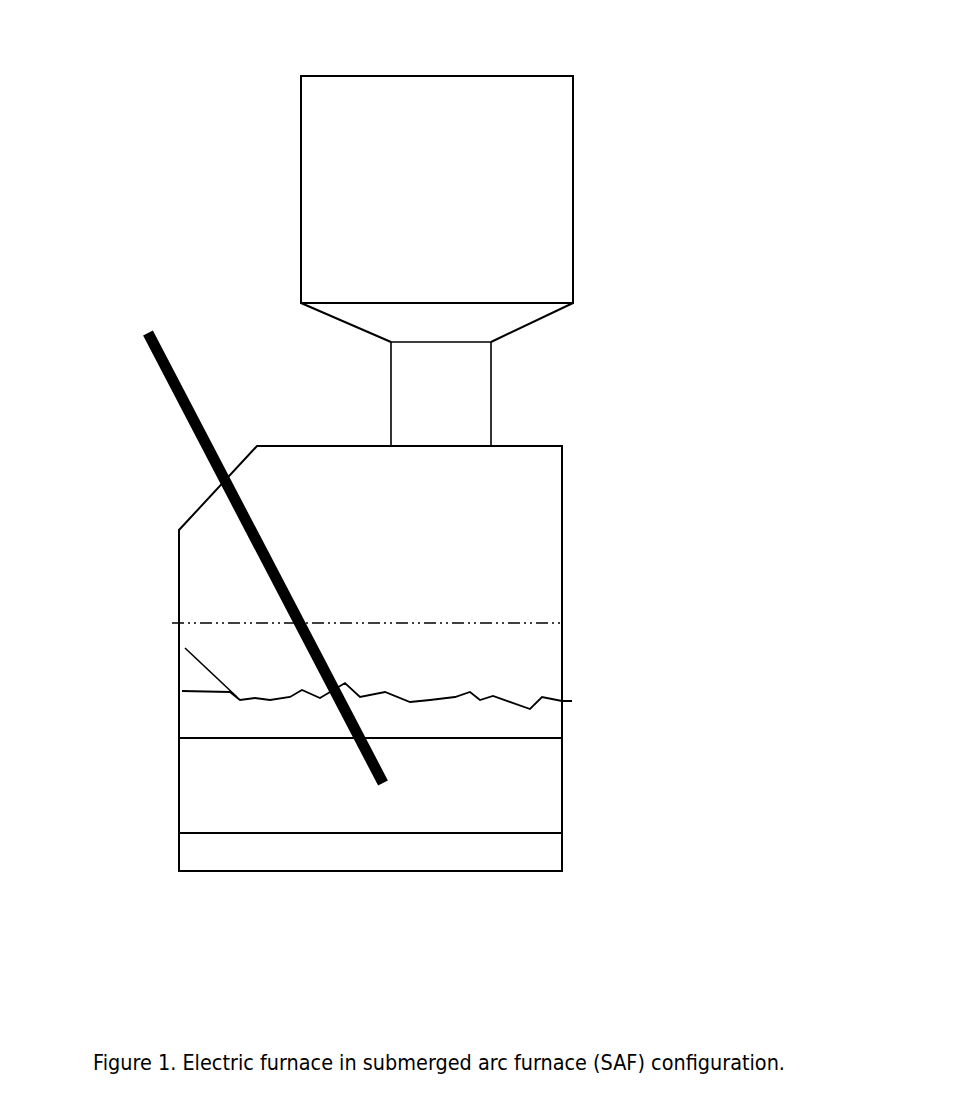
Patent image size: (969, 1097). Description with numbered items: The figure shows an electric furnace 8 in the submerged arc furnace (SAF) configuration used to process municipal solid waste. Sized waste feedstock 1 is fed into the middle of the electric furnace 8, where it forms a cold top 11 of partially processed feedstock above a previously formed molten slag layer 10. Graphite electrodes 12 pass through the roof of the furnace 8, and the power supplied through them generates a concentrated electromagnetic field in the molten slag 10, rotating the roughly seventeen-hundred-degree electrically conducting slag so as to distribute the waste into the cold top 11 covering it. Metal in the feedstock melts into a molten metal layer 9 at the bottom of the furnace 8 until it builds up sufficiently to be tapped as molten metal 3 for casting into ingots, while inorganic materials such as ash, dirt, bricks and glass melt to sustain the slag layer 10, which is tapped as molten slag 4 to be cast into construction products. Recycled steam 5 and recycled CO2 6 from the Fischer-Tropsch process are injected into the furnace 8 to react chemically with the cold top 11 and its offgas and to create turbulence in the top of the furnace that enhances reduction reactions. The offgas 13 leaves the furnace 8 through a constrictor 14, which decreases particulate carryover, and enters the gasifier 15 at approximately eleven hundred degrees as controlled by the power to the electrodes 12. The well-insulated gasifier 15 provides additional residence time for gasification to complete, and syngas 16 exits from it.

The waste feedstock 1 is at (187, 671).
The molten metal 3 is at (179, 852).
The molten slag 4 is at (563, 814).
The recycled steam 5 is at (564, 607).
The recycled CO2 6 is at (564, 531).
The electric furnace 8 is at (178, 577).
The molten metal layer 9 is at (370, 857).
The molten slag layer 10 is at (370, 802).
The cold top 11 is at (375, 715).
The graphite electrodes 12 is at (255, 558).
The offgas 13 is at (441, 324).
The constrictor 14 is at (487, 394).
The gasifier 15 is at (437, 209).
The syngas 16 is at (573, 133).